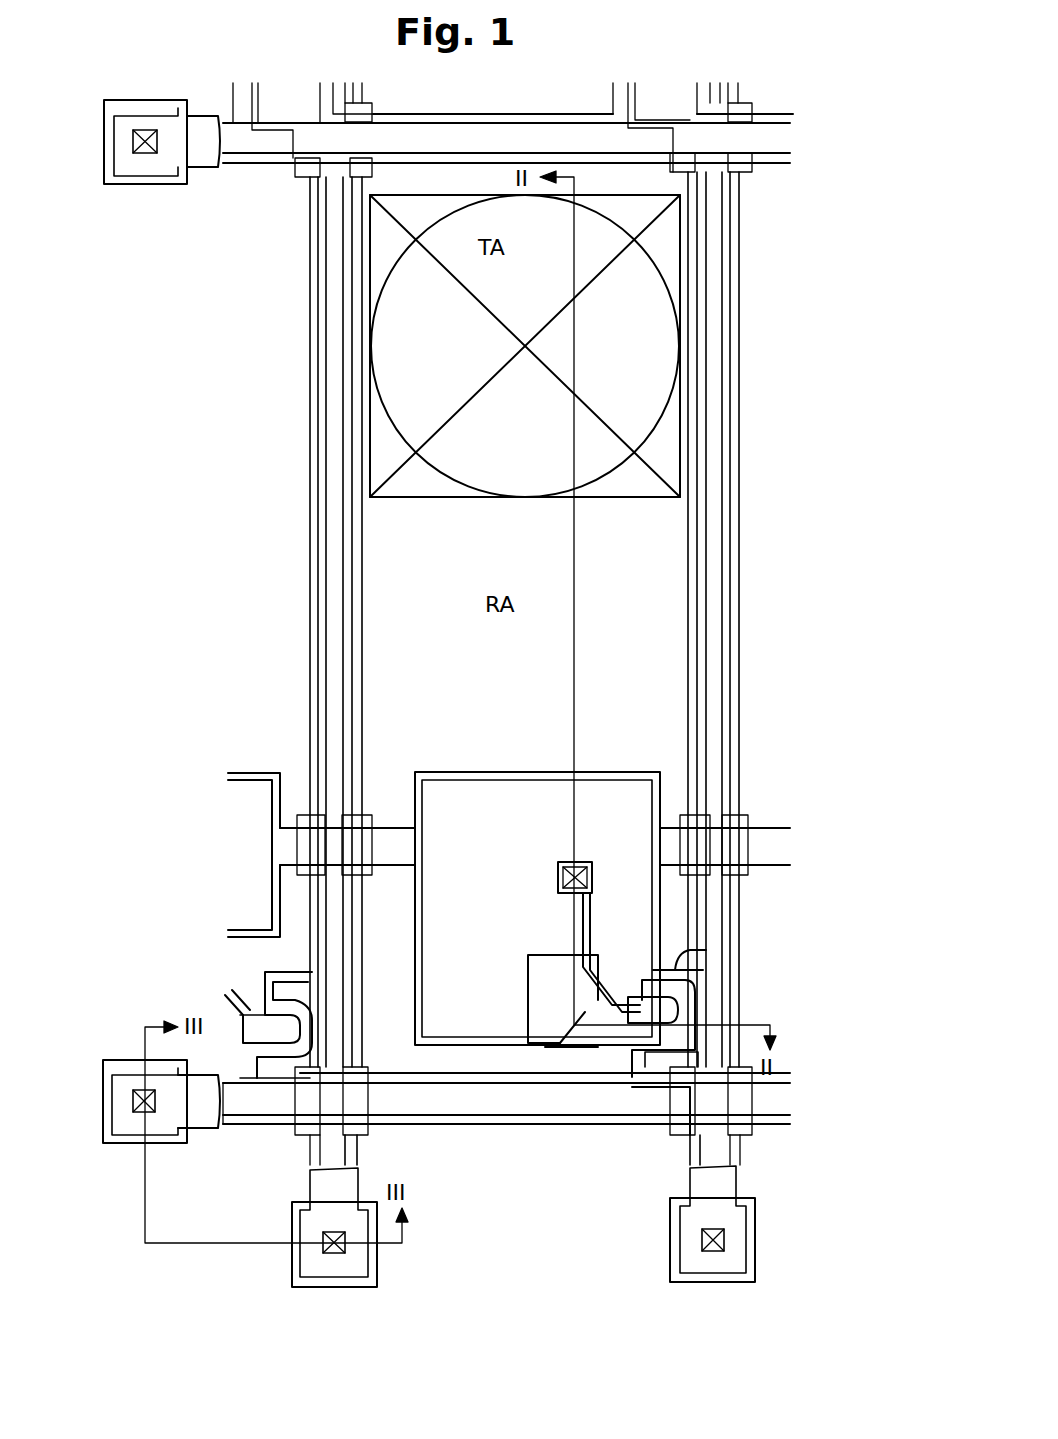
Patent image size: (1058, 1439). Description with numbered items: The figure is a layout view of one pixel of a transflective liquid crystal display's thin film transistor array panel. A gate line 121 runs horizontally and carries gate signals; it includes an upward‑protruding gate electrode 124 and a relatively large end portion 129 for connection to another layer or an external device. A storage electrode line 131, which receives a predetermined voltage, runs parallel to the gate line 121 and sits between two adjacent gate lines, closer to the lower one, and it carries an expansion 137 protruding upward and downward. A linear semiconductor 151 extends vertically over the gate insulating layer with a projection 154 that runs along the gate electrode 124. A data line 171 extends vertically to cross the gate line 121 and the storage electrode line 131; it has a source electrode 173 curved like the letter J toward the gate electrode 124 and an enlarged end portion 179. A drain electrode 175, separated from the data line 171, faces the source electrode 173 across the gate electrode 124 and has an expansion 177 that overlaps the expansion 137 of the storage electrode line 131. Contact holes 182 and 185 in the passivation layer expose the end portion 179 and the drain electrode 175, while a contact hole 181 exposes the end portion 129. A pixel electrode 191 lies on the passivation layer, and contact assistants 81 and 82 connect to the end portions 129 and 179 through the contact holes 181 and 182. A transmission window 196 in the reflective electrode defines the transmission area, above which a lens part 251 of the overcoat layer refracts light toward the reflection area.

The gate line 121 is at (480, 1124).
The gate electrode 124 is at (603, 958).
The end portion of gate line 129 is at (112, 1120).
The storage electrode line 131 is at (752, 824).
The expansion of storage electrode line 137 is at (665, 790).
The linear semiconductor 151 is at (722, 478).
The projection of semiconductor 154 is at (700, 1012).
The data line 171 is at (738, 552).
The source electrode 173 is at (688, 1000).
The drain electrode 175 is at (588, 1047).
The expansion of drain electrode 177 is at (662, 772).
The end portion of data line 179 is at (300, 1265).
The contact hole 181 is at (133, 1100).
The contact hole 182 is at (345, 1248).
The contact hole 185 is at (596, 878).
The pixel electrode 191 is at (705, 403).
The transmission window 196 is at (686, 222).
The lens part 251 is at (668, 262).
The contact assistant 81 is at (115, 1144).
The contact assistant 82 is at (292, 1228).